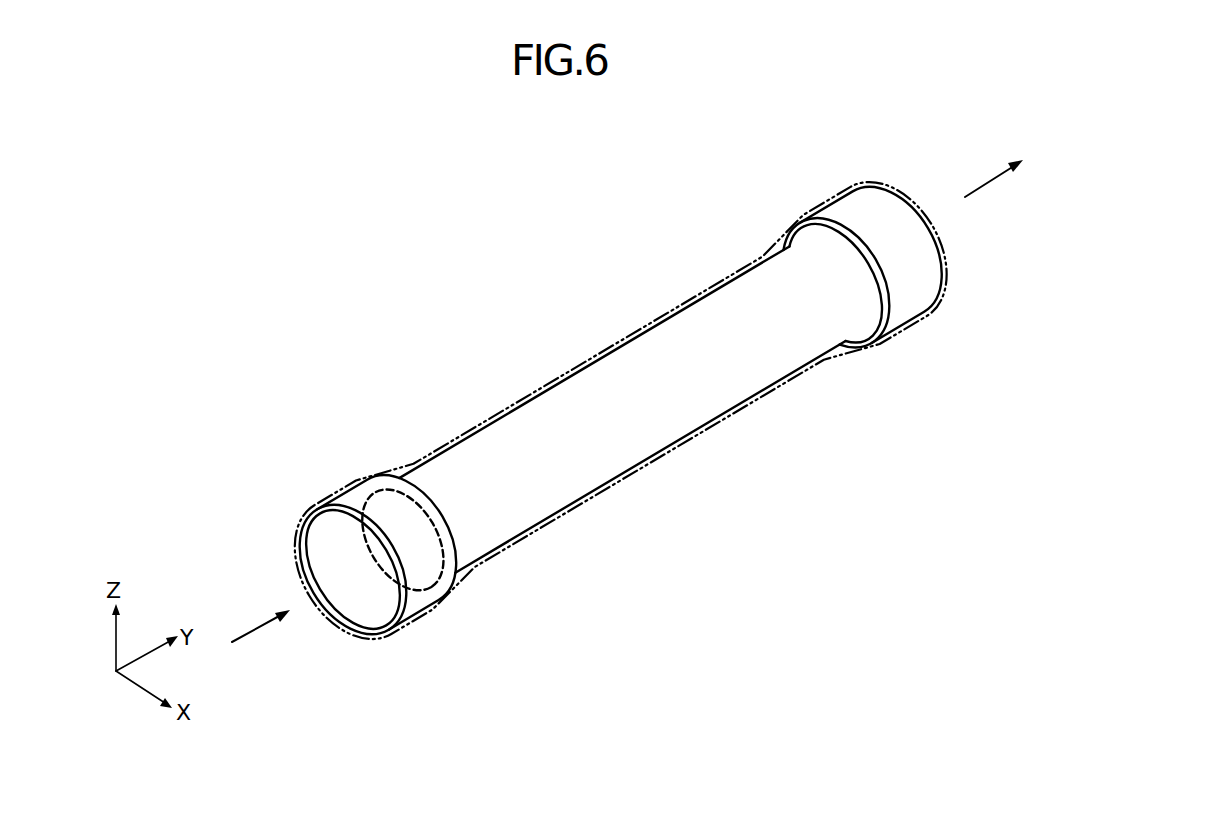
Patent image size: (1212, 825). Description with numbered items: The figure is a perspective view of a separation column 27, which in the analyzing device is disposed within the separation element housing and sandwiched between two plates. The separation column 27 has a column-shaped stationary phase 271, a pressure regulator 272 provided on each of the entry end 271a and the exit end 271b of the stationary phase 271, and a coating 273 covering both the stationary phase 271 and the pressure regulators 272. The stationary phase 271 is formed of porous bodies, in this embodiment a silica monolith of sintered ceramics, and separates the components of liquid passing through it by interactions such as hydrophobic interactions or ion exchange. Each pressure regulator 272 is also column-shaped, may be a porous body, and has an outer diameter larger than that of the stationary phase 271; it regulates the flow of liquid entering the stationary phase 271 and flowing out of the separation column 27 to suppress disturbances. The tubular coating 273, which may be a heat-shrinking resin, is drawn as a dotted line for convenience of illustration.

The separation column 27 is at (893, 151).
The stationary phase 271 is at (646, 348).
The entry end 271a is at (441, 594).
The exit end 271b is at (882, 300).
The pressure regulator 272 is at (848, 216).
The coating 273 is at (571, 363).